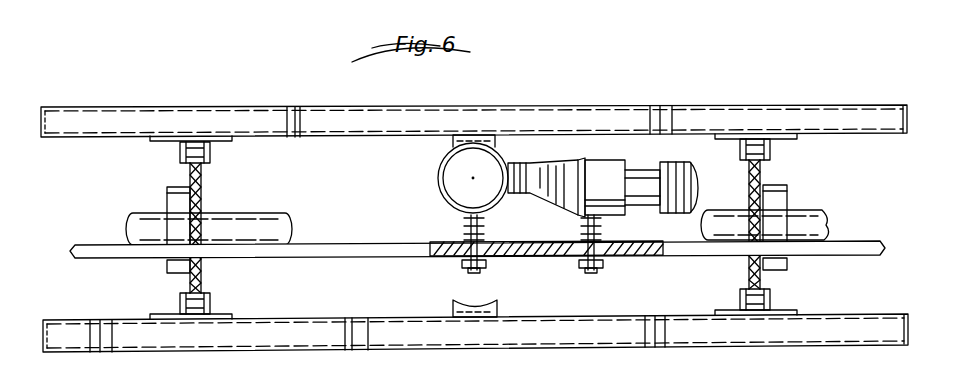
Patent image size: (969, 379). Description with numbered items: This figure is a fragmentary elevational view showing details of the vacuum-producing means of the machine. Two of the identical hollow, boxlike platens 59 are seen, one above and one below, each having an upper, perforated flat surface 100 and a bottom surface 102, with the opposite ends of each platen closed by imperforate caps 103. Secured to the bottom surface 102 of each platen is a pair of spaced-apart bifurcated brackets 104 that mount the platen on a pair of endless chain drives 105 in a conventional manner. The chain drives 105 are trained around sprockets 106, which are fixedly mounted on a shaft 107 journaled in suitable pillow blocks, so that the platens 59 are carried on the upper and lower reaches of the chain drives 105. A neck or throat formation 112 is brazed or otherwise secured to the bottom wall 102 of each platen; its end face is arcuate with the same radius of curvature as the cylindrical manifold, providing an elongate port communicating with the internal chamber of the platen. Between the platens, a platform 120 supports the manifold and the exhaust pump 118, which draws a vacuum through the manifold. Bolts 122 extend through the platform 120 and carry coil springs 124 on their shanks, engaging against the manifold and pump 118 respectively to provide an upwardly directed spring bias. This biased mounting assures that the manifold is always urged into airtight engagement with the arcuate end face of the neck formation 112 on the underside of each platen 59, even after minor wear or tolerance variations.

The platen 59 is at (293, 118).
The upper perforated flat surface 100 is at (425, 106).
The bottom surface 102 is at (393, 136).
The imperforate cap 103 is at (908, 112).
The bifurcated bracket 104 is at (210, 150).
The endless chain drive 105 is at (200, 172).
The sprocket 106 is at (170, 265).
The shaft 107 is at (808, 222).
The neck formation 112 is at (497, 142).
The exhaust pump 118 is at (638, 178).
The platform 120 is at (618, 248).
The bolt 122 is at (484, 218).
The coil spring 124 is at (470, 220).